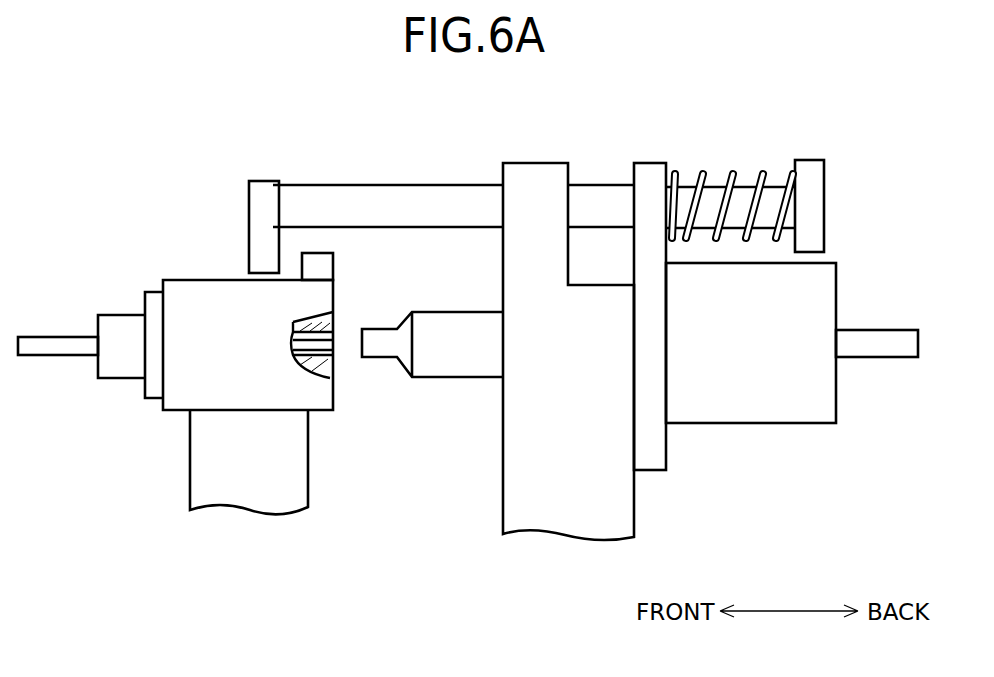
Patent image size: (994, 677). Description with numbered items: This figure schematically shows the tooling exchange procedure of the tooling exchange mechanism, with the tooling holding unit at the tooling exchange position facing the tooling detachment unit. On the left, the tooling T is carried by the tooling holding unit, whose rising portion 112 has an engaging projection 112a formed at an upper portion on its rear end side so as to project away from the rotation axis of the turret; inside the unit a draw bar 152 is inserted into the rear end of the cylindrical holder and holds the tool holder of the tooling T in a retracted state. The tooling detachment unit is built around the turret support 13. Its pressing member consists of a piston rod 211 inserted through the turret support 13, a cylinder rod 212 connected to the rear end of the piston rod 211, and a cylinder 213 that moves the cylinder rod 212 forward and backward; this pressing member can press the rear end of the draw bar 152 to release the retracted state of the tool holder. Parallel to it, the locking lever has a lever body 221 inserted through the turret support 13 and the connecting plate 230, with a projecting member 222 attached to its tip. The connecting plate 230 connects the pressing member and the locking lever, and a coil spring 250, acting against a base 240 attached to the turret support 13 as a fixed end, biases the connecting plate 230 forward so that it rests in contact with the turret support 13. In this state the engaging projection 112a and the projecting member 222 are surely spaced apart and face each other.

The turret support 13 is at (562, 522).
The rising portion 112 is at (176, 414).
The engaging projection 112a is at (327, 266).
The draw bar 152 is at (323, 358).
The piston rod 211 is at (458, 362).
The cylinder rod 212 is at (883, 347).
The cylinder 213 is at (762, 407).
The lever body 221 is at (383, 196).
The projecting member 222 is at (263, 245).
The connecting plate 230 is at (652, 173).
The base 240 is at (812, 173).
The coil spring 250 is at (734, 173).
The tooling T is at (77, 325).